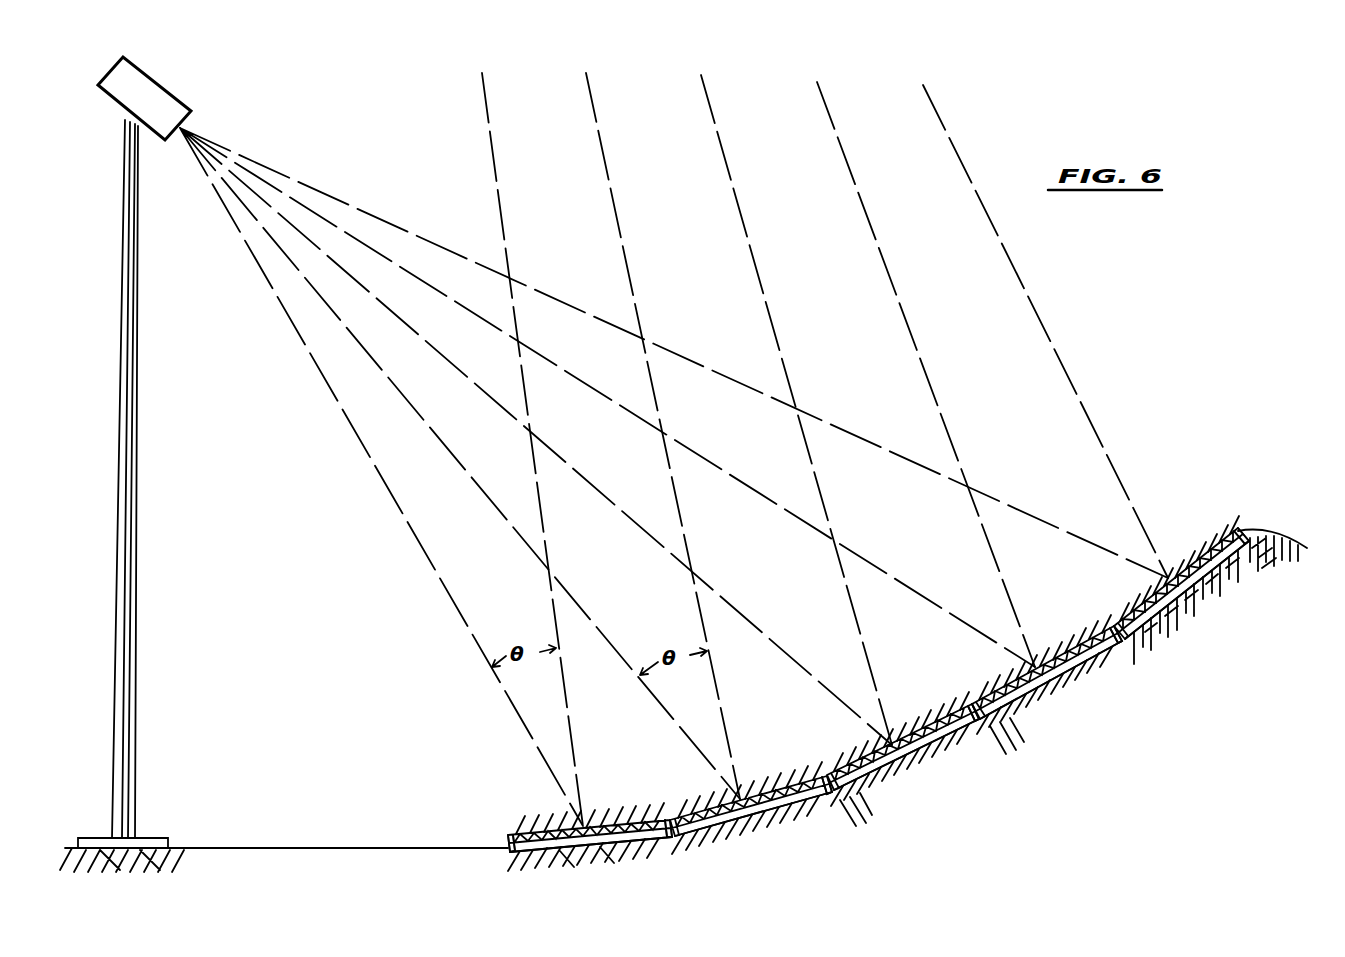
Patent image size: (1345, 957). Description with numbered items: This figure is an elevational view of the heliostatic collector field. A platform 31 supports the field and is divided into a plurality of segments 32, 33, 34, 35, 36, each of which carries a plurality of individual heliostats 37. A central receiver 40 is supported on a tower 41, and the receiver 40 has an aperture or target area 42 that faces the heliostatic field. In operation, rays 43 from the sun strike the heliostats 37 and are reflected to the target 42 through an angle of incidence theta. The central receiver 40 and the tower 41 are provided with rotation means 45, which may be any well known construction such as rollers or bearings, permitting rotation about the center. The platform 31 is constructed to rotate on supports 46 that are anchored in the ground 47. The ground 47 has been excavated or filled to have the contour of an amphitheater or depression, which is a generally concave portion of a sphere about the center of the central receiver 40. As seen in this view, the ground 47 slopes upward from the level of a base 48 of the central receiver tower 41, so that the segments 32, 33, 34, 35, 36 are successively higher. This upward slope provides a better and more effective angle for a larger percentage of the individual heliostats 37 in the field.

The platform 31 is at (907, 699).
The segment 32 is at (612, 822).
The segment 33 is at (760, 800).
The segment 34 is at (915, 768).
The segment 35 is at (1022, 694).
The segment 36 is at (1215, 575).
The heliostat 37 is at (556, 822).
The central receiver 40 is at (162, 97).
The tower 41 is at (130, 464).
The aperture or target area 42 is at (183, 131).
The rays 43 is at (500, 205).
The rotation means 45 is at (158, 838).
The supports 46 is at (507, 848).
The ground 47 is at (320, 848).
The base 48 is at (103, 838).